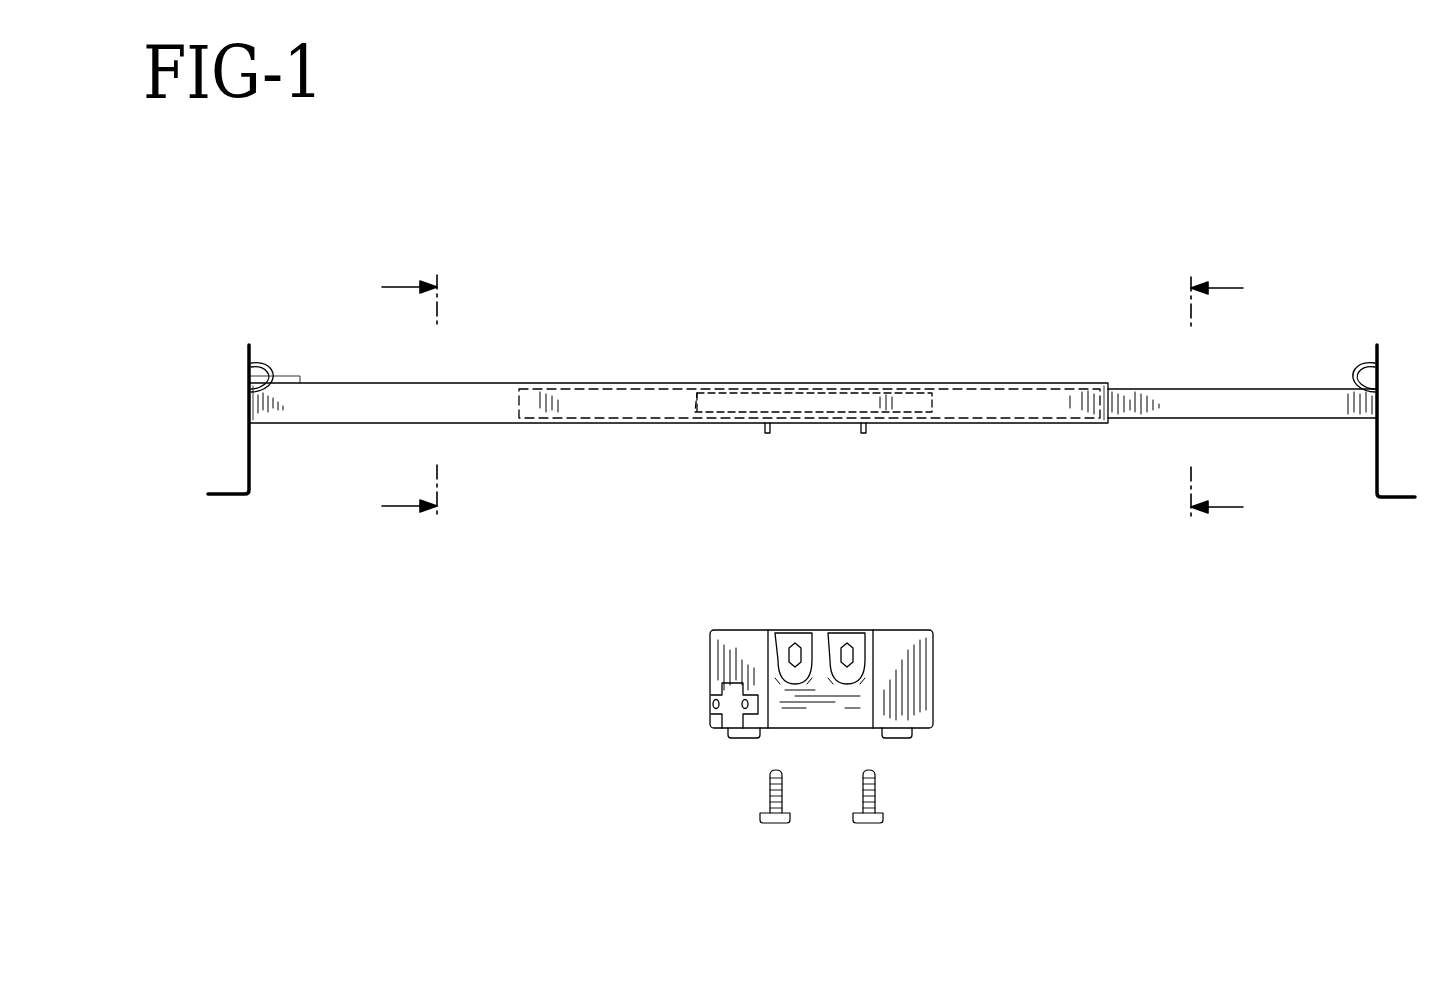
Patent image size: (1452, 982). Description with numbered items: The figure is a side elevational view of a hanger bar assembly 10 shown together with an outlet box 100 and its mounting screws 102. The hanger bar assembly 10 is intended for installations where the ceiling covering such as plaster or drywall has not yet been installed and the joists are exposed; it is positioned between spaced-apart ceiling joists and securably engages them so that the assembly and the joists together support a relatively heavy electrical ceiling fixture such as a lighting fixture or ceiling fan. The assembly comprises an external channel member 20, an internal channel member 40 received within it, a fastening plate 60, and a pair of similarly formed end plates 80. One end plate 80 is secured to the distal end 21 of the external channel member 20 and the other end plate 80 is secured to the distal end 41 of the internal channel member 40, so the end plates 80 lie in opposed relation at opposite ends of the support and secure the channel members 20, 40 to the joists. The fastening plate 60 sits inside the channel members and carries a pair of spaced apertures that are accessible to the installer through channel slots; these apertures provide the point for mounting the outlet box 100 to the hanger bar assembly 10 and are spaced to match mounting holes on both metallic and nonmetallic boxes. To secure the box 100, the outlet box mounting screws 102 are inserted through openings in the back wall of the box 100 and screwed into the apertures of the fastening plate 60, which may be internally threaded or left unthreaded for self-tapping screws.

The hanger bar assembly 10 is at (698, 316).
The external channel member 20 is at (492, 412).
The distal end of the external channel member 21 is at (293, 382).
The internal channel member 40 is at (1163, 410).
The distal end of the internal channel member 41 is at (1343, 405).
The fastening plate 60 is at (730, 400).
The end plates 80 is at (245, 375).
The outlet box 100 is at (722, 650).
The outlet box mounting screws 102 is at (850, 822).